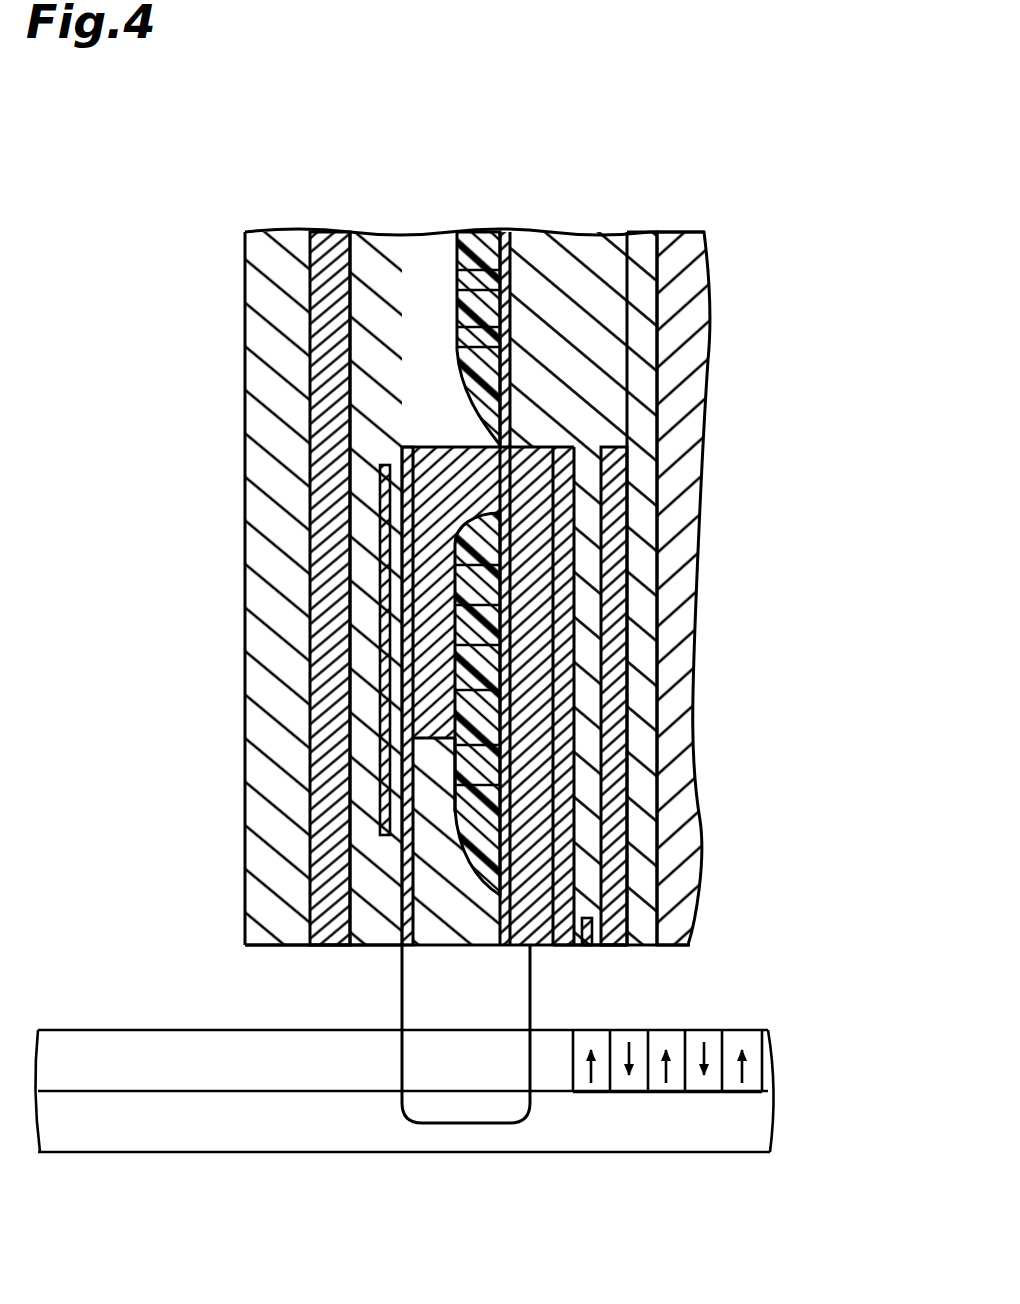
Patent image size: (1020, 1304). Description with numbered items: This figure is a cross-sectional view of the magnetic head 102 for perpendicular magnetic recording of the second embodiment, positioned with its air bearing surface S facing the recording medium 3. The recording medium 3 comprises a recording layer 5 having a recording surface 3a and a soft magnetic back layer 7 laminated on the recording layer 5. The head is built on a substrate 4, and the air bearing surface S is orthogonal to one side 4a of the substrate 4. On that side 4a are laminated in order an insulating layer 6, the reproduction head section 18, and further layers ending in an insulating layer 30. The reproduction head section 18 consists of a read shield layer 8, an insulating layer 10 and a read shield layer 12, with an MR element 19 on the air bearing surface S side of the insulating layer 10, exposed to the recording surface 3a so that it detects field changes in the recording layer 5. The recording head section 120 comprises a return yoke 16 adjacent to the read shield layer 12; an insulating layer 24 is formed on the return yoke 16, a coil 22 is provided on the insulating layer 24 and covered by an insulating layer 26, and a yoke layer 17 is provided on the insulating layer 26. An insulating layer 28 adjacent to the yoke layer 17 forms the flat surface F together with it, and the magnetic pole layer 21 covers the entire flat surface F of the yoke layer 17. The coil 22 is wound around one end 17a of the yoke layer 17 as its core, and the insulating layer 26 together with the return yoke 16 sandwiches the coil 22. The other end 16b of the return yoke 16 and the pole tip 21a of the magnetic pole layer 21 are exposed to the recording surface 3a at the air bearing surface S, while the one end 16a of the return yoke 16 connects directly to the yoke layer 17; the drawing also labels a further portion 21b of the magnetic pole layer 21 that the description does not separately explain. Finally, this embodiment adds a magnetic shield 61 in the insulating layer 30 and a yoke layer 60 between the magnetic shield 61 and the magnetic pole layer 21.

The magnetic head for perpendicular magnetic recording 102 is at (146, 170).
The recording medium 3 is at (852, 1055).
The recording surface 3a is at (712, 1028).
The recording layer 5 is at (772, 1062).
The soft magnetic back layer 7 is at (774, 1110).
The substrate 4 is at (695, 275).
The one side of the substrate 4a is at (645, 238).
The insulating layer 6 is at (642, 328).
The read shield layer 8 is at (620, 472).
The insulating layer 10 is at (588, 517).
The read shield layer 12 is at (563, 555).
The return yoke 16 is at (535, 580).
The one end of the return yoke 16a is at (537, 445).
The other end of the return yoke 16b is at (537, 950).
The yoke layer 17 is at (450, 438).
The one end of the yoke layer 17a is at (400, 442).
The reproduction head section 18 is at (623, 950).
The MR element 19 is at (625, 948).
The magnetic pole layer 21 is at (125, 558).
The pole tip 21a is at (398, 940).
The thermal expansion layer 21b is at (405, 548).
The coil 22 is at (472, 690).
The insulating layer 24 is at (482, 632).
The insulating layer 26 is at (619, 534).
The insulating layer 28 is at (470, 915).
The insulating layer 30 is at (270, 828).
The yoke layer 60 is at (410, 475).
The magnetic shield 61 is at (330, 340).
The recording head section 120 is at (396, 952).
The flat surface F is at (405, 525).
The air bearing surface S is at (275, 948).